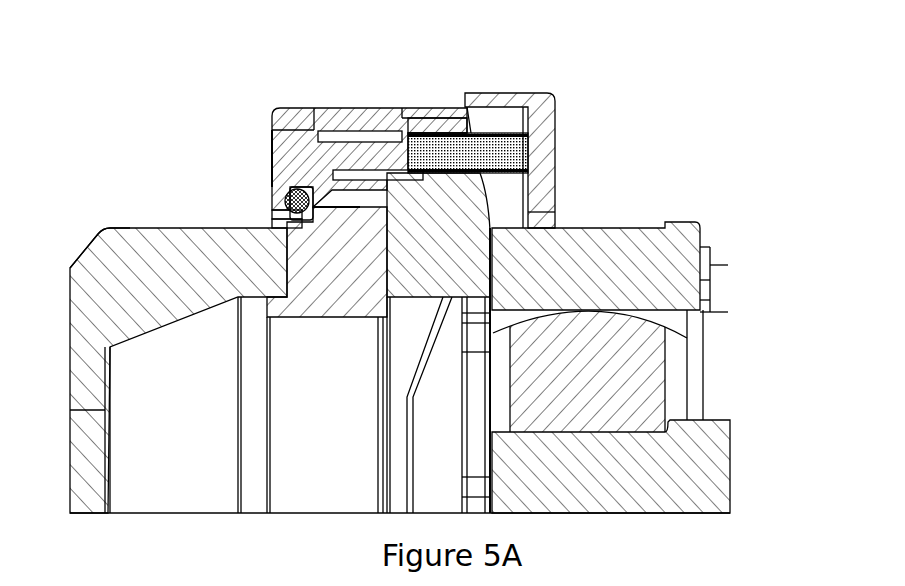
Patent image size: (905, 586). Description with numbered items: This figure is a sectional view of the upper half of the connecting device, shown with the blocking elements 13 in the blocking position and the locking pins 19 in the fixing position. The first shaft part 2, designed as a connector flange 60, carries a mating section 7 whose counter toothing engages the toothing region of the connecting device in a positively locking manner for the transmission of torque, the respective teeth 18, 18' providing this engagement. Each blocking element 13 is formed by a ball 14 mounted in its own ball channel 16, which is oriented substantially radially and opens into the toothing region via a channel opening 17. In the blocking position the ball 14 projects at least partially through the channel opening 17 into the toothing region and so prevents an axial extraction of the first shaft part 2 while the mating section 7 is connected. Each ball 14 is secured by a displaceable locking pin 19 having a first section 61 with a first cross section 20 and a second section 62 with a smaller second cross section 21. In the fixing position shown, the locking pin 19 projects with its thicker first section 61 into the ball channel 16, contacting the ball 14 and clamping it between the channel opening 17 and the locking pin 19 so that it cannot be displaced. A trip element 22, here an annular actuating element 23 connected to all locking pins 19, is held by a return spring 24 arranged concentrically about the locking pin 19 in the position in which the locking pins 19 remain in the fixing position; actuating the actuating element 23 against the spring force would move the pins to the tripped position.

The first shaft part 2 is at (103, 257).
The connector flange 60 is at (120, 243).
The mating section 7 is at (322, 253).
The ball channel 16 is at (293, 127).
The locking pin 19 is at (360, 157).
The first cross section 20 is at (282, 148).
The first section 61 is at (283, 165).
The second cross section 21 is at (387, 163).
The blocking element 13 is at (297, 198).
The ball 14 is at (316, 135).
The channel opening 17 is at (283, 203).
The tooth 18 is at (243, 199).
The tooth 18' is at (331, 392).
The return spring 24 is at (483, 157).
The second section 62 is at (405, 158).
The trip element 22 is at (548, 127).
The actuating element 23 is at (548, 160).